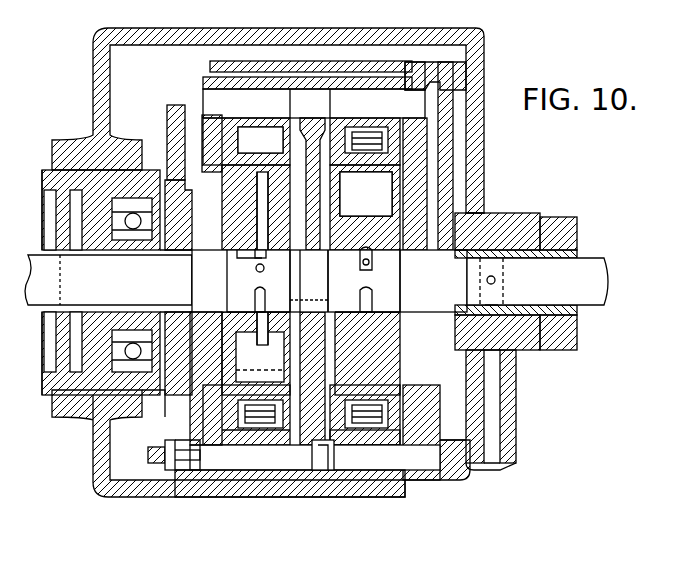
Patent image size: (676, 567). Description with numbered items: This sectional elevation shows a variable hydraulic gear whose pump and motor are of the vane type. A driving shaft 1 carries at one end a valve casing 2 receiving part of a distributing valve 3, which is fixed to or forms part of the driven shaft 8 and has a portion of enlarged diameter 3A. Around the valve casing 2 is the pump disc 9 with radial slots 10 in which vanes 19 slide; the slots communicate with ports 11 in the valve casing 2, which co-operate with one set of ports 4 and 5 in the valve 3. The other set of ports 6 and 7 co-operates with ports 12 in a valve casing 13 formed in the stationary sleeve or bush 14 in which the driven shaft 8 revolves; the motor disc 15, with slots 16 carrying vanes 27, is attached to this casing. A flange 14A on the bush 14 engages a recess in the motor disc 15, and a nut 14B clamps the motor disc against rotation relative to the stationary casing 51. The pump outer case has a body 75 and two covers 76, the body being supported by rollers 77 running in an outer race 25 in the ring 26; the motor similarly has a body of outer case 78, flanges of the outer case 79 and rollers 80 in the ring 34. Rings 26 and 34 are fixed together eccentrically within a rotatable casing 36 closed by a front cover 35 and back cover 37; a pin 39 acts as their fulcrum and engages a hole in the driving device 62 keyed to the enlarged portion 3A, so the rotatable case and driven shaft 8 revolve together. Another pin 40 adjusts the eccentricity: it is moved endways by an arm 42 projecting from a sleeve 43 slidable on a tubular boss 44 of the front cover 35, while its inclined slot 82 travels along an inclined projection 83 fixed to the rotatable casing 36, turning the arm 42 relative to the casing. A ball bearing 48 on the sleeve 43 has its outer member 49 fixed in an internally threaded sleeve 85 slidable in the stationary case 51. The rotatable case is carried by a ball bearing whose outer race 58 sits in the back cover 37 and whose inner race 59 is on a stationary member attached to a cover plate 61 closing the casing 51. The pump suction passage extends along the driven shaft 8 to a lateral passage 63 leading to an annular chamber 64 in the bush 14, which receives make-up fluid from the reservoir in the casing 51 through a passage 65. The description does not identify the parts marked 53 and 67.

The driving shaft 1 is at (108, 280).
The valve casing 2 is at (252, 252).
The distributing valve 3 is at (313, 294).
The portion of enlarged diameter 3A is at (308, 280).
The port 4 is at (258, 272).
The port 5 is at (256, 296).
The port 6 is at (370, 262).
The port 7 is at (362, 305).
The driven shaft 8 is at (537, 281).
The pump disc 9 is at (228, 190).
The radial slots 10 is at (276, 334).
The ports 11 is at (262, 50).
The ports 12 is at (373, 307).
The valve casing 13 is at (375, 317).
The stationary sleeve or bush 14 is at (480, 215).
The flange 14A is at (315, 281).
The nut 14B is at (565, 223).
The motor disc 15 is at (450, 455).
The slots 16 is at (362, 228).
The vanes 19 is at (260, 357).
The outer race 25 is at (240, 430).
The ring 26 is at (236, 68).
The vanes 27 is at (366, 194).
The ring 34 is at (365, 84).
The front cover 35 is at (205, 79).
The rotatable casing 36 is at (305, 68).
The back cover 37 is at (450, 74).
The pin 39 is at (314, 103).
The pin 40 is at (410, 462).
The arm 42 is at (182, 410).
The sleeve 43 is at (133, 242).
The tubular boss 44 is at (75, 256).
The ball bearing 48 is at (150, 340).
The outer member 49 is at (108, 396).
The stationary casing 51 is at (107, 38).
The ring 53 is at (365, 435).
The outer race 58 is at (470, 365).
The inner race 59 is at (458, 334).
The cover plate 61 is at (476, 162).
The driving device 62 is at (315, 126).
The lateral passage 63 is at (495, 279).
The annular space or chamber 64 is at (499, 304).
The passage 65 is at (490, 437).
The shaft end 67 is at (194, 257).
The body 75 is at (185, 468).
The covers 76 is at (278, 412).
The rollers 77 is at (252, 410).
The body of outer case 78 is at (446, 126).
The flanges of the outer case 79 is at (446, 150).
The rollers 80 is at (370, 140).
The inclined slot 82 is at (326, 465).
The inclined projection 83 is at (302, 448).
The internally threaded sleeve 85 is at (58, 380).